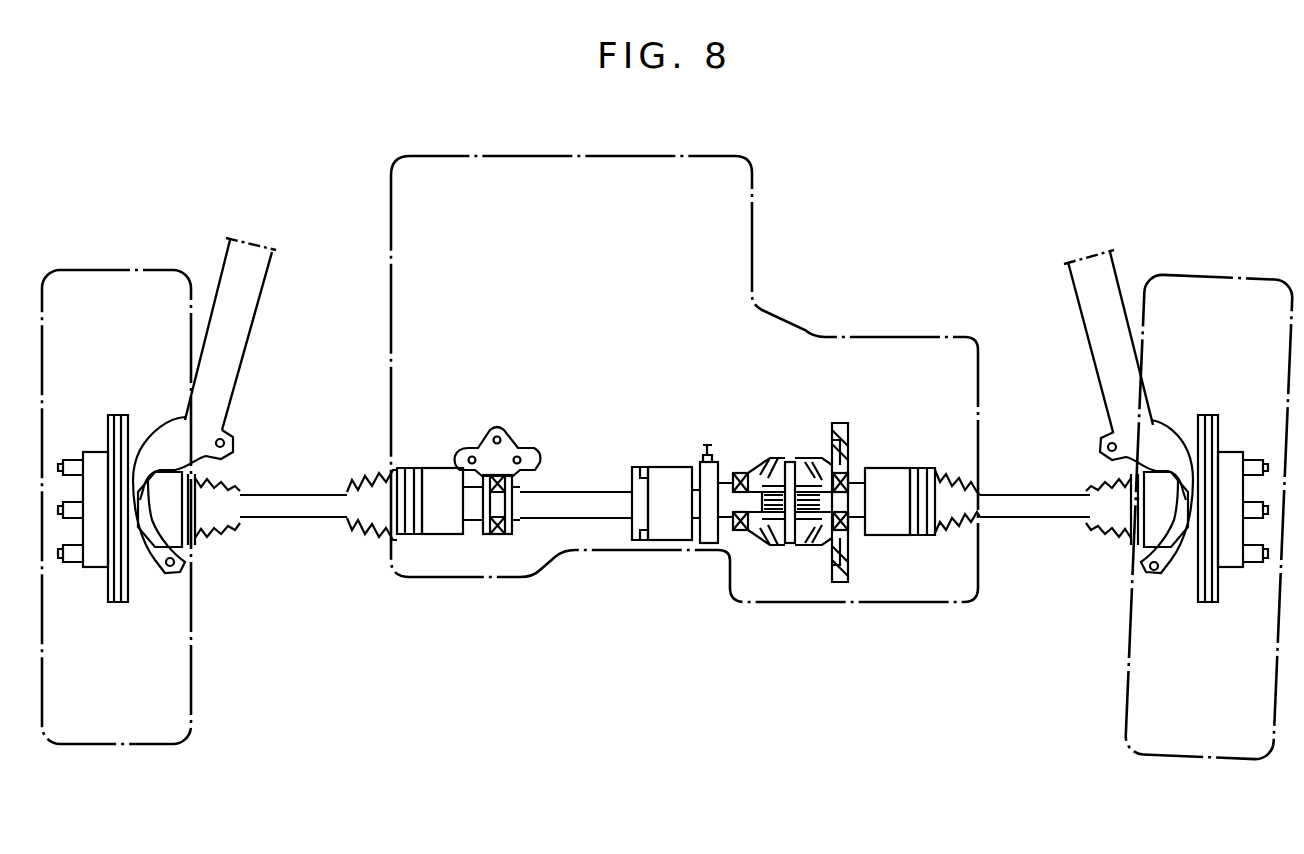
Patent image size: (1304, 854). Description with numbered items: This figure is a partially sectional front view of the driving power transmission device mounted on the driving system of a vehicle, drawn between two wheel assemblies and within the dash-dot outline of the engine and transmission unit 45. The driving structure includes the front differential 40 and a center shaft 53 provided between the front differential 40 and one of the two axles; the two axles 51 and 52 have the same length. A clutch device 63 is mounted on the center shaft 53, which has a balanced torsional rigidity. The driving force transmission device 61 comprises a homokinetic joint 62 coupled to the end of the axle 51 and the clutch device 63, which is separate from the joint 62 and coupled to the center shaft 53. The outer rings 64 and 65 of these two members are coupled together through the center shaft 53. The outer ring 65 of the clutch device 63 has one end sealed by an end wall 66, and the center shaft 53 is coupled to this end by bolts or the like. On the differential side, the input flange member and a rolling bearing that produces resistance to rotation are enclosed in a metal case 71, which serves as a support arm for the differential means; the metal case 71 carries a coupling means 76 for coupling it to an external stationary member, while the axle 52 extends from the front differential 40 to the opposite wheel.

The front differential 40 is at (784, 449).
The engine/transmission unit outline 45 is at (730, 213).
The axle 51 is at (300, 505).
The axle 52 is at (1057, 510).
The center shaft 53 is at (560, 500).
The driving force transmission device 61 is at (620, 388).
The homokinetic joint 62 is at (479, 474).
The clutch device 63 is at (655, 459).
The outer ring 64 is at (440, 525).
The outer ring 65 is at (662, 528).
The end wall 66 is at (634, 520).
The metal case 71 is at (708, 535).
The coupling means 76 is at (698, 453).